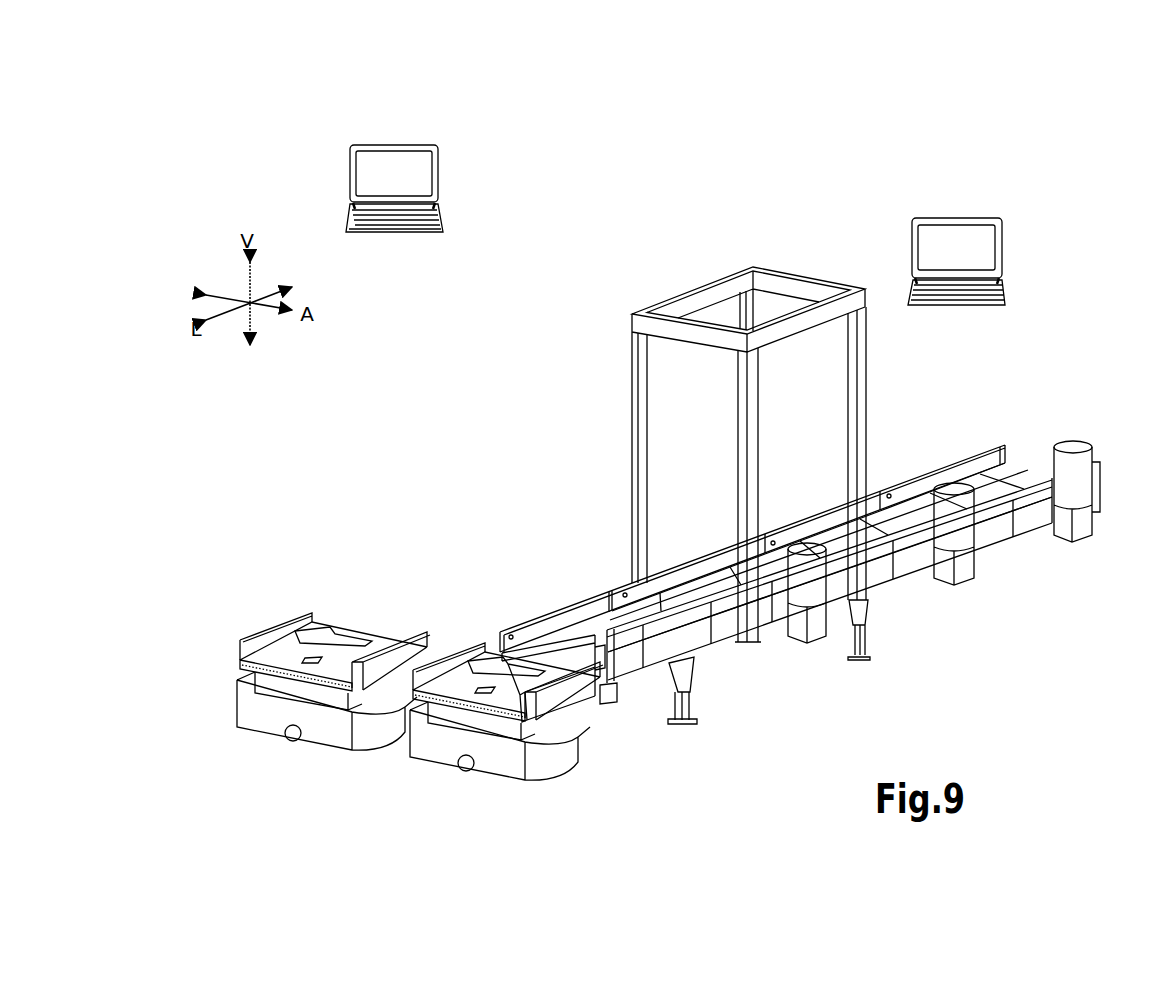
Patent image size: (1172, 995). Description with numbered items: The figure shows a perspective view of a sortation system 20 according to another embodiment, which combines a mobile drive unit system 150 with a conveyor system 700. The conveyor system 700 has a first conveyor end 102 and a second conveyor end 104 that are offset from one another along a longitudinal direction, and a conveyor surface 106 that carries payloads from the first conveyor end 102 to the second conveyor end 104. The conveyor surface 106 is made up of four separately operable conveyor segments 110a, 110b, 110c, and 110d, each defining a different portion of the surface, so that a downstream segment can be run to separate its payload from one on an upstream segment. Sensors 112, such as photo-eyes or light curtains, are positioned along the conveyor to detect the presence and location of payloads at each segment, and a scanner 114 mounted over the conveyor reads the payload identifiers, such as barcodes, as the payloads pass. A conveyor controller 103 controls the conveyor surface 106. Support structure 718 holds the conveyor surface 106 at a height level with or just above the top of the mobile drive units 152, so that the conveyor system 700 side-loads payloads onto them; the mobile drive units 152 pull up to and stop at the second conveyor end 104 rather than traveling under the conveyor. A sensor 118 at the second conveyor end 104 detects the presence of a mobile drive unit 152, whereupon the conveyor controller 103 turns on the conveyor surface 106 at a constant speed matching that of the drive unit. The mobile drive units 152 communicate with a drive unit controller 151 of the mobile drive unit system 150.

The sortation system 20 is at (562, 276).
The first conveyor end 102 is at (1020, 468).
The conveyor controller 103 is at (1002, 248).
The second conveyor end 104 is at (555, 662).
The conveyor surface 106 is at (582, 638).
The conveyor segment 110a is at (975, 488).
The conveyor segment 110b is at (838, 562).
The conveyor segment 110c is at (710, 588).
The conveyor segment 110d is at (601, 616).
The sensor 112 is at (509, 637).
The scanner 114 is at (781, 266).
The sensor 118 is at (612, 660).
The mobile drive unit system 150 is at (490, 132).
The drive unit controller 151 is at (350, 175).
The mobile drive unit 152 is at (292, 650).
The conveyor system 700 is at (1025, 175).
The support structure 718 is at (694, 720).